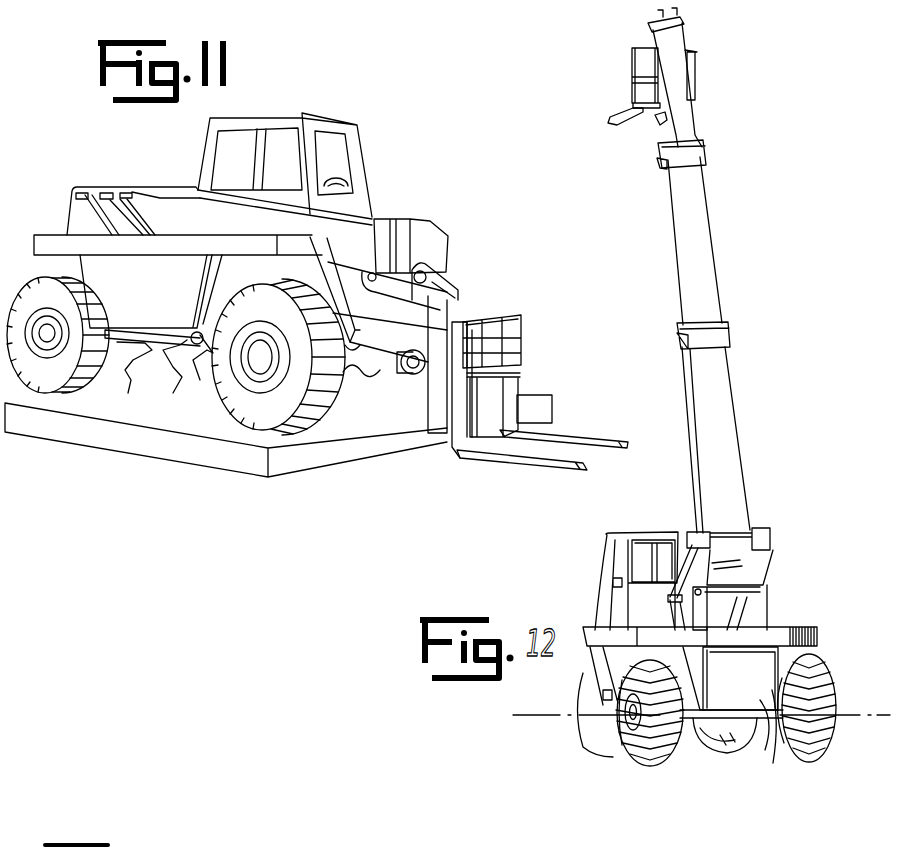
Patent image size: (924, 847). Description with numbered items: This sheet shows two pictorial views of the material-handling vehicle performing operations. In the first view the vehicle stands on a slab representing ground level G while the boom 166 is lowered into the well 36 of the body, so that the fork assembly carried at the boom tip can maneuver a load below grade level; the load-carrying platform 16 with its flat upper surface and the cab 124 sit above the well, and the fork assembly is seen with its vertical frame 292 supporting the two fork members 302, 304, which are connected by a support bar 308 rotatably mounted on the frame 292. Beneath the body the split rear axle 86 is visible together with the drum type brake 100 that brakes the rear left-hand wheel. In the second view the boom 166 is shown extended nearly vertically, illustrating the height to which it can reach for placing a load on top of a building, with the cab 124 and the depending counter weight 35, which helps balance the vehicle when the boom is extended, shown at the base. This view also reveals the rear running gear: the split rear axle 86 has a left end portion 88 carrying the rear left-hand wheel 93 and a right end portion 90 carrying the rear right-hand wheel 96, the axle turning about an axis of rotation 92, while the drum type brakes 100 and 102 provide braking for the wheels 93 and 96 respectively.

In FIG. 11, the load-carrying platform 16 is at (48, 231).
In FIG. 11, the cab 124 is at (313, 114).
In FIG. 12, the cab 124 is at (618, 530).
In FIG. 11, the boom 166 is at (376, 219).
In FIG. 12, the boom 166 is at (737, 405).
In FIG. 11, the split rear axle 86 is at (79, 346).
In FIG. 12, the split rear axle 86 is at (682, 740).
In FIG. 11, the drum type brake 100 is at (185, 379).
In FIG. 11, the well 36 is at (362, 291).
In FIG. 11, the vertical frame 292 is at (524, 347).
In FIG. 12, the vertical frame 292 is at (632, 76).
In FIG. 11, the support bar 308 is at (500, 375).
In FIG. 11, the fork member 302 is at (577, 432).
In FIG. 11, the fork member 304 is at (513, 472).
In FIG. 11, the ground level G is at (200, 440).
In FIG. 12, the axis of rotation 92 is at (552, 708).
In FIG. 12, the rear left-hand wheel 93 is at (647, 768).
In FIG. 12, the left end portion 88 is at (705, 733).
In FIG. 12, the counter weight 35 is at (758, 698).
In FIG. 12, the right end portion 90 is at (765, 750).
In FIG. 12, the drum type brake 102 is at (773, 763).
In FIG. 12, the rear right-hand wheel 96 is at (812, 763).